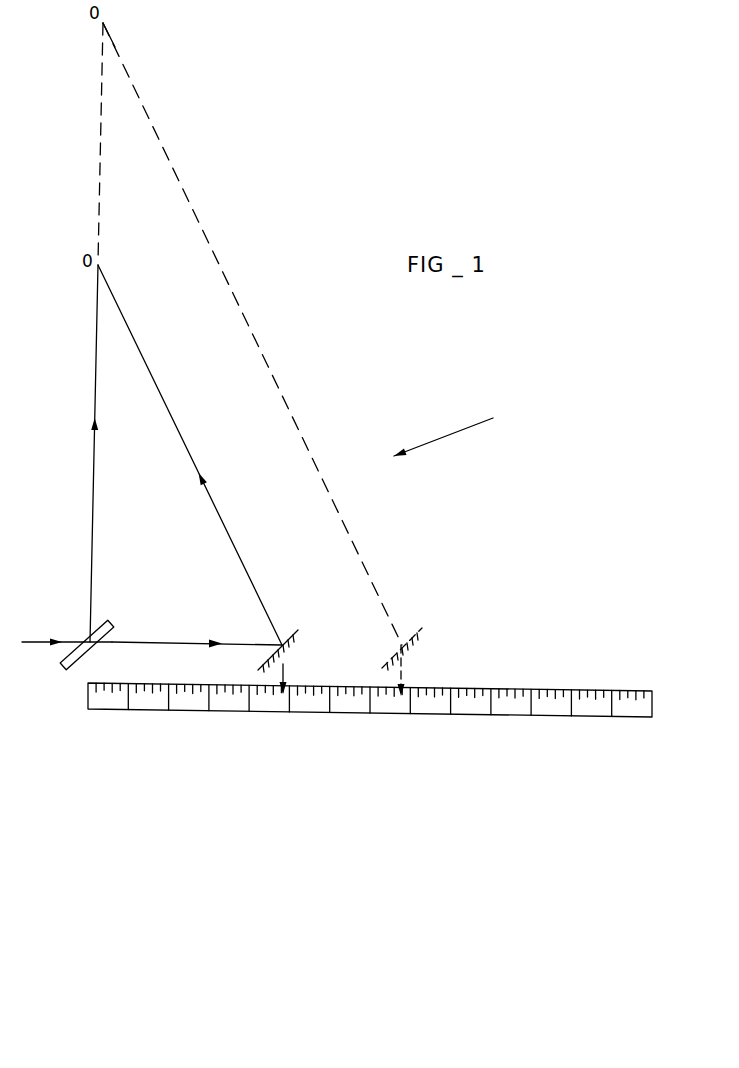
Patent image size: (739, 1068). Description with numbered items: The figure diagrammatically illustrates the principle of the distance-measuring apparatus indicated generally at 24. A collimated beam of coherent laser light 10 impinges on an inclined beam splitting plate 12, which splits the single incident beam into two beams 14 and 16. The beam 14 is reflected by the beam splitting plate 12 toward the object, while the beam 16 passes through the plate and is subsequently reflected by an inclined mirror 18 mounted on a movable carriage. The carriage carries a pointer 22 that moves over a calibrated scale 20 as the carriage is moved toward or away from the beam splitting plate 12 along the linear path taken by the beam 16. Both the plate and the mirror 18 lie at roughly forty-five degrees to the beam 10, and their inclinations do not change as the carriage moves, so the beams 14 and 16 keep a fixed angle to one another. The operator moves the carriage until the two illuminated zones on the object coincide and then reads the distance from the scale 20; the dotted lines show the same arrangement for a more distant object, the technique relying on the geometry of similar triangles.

The collimated beam of coherent laser light 10 is at (56, 642).
The beam splitting plate 12 is at (64, 671).
The beam 14 is at (90, 537).
The beam 16 is at (186, 642).
The inclined mirror 18 is at (298, 630).
The calibrated scale 20 is at (352, 713).
The pointer 22 is at (342, 670).
The apparatus 24 is at (456, 430).